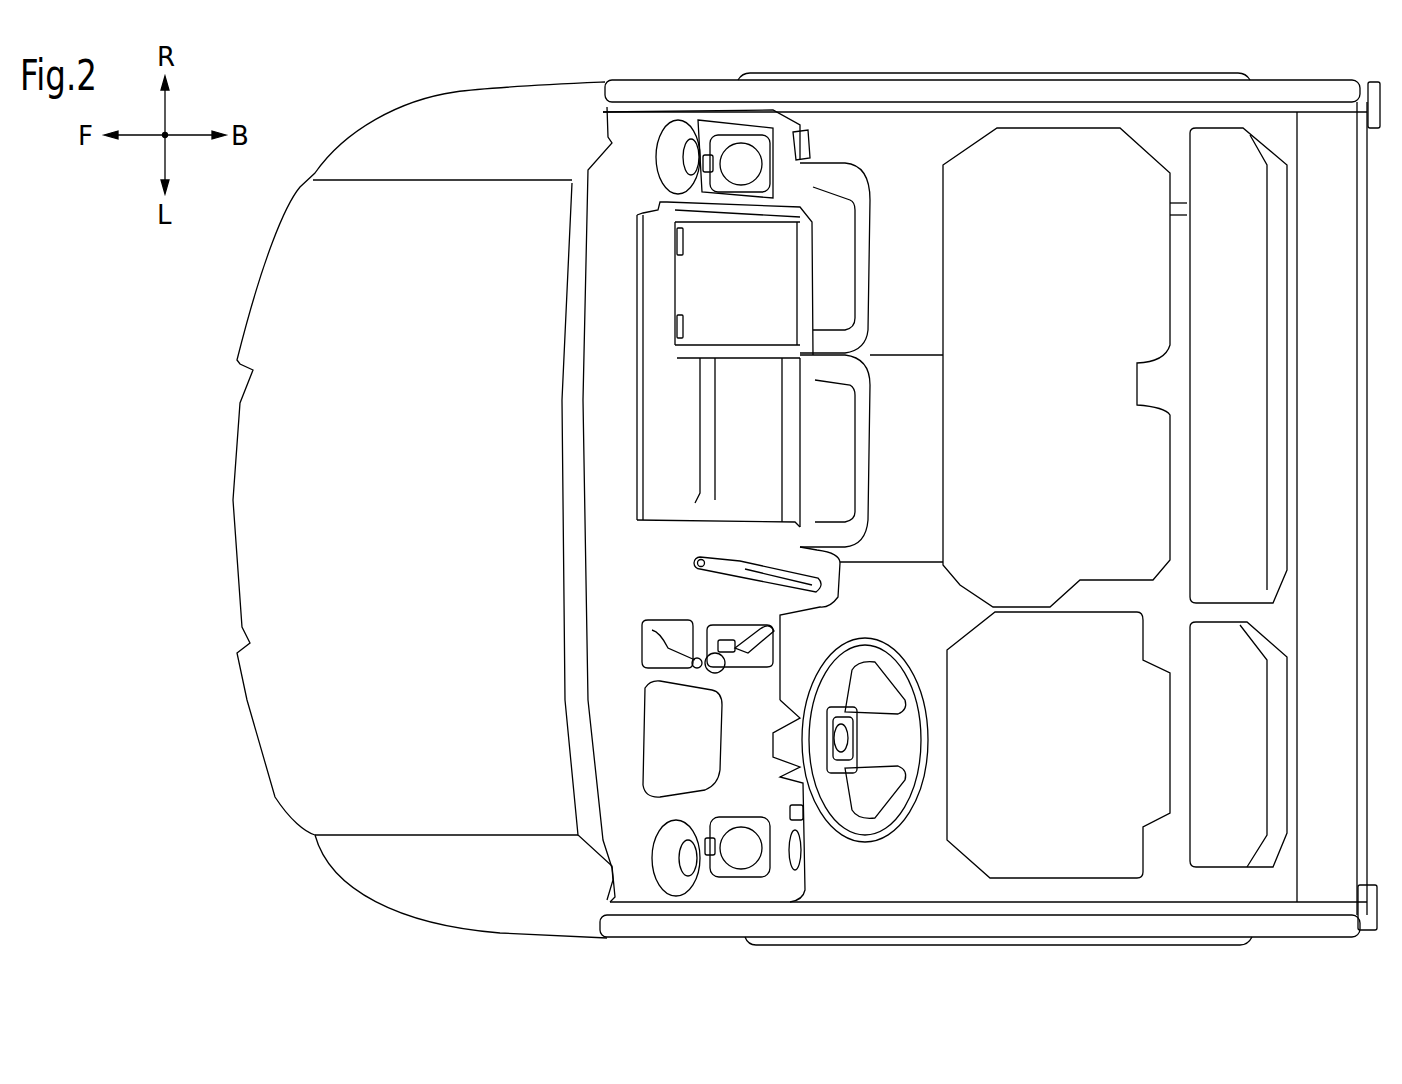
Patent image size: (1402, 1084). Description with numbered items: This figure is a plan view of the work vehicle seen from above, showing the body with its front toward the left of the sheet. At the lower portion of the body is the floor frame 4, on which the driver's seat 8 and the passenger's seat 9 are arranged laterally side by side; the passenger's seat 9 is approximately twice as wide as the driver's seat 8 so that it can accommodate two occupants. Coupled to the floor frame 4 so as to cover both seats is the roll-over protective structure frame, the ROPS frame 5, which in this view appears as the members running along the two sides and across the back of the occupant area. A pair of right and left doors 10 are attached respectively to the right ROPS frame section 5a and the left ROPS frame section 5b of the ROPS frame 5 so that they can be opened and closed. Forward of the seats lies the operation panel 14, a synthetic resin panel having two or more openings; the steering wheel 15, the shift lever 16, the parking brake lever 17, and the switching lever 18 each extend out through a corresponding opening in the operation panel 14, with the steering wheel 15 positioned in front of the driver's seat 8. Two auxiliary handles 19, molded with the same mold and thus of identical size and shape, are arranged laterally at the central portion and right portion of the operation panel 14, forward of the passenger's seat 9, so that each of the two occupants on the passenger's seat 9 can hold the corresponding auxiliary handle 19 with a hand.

The floor frame 4 is at (914, 140).
The roll-over protective structure (ROPS) frame 5 is at (1300, 80).
The right ROPS frame section 5a is at (603, 92).
The left ROPS frame section 5b is at (597, 920).
The driver's seat 8 is at (977, 853).
The passenger's seat 9 is at (1117, 150).
The door 10 is at (745, 73).
The operation panel 14 is at (617, 793).
The steering wheel 15 is at (907, 733).
The shift lever 16 is at (767, 633).
The parking brake lever 17 is at (718, 563).
The switching lever 18 is at (709, 672).
The auxiliary handle 19 is at (865, 268).